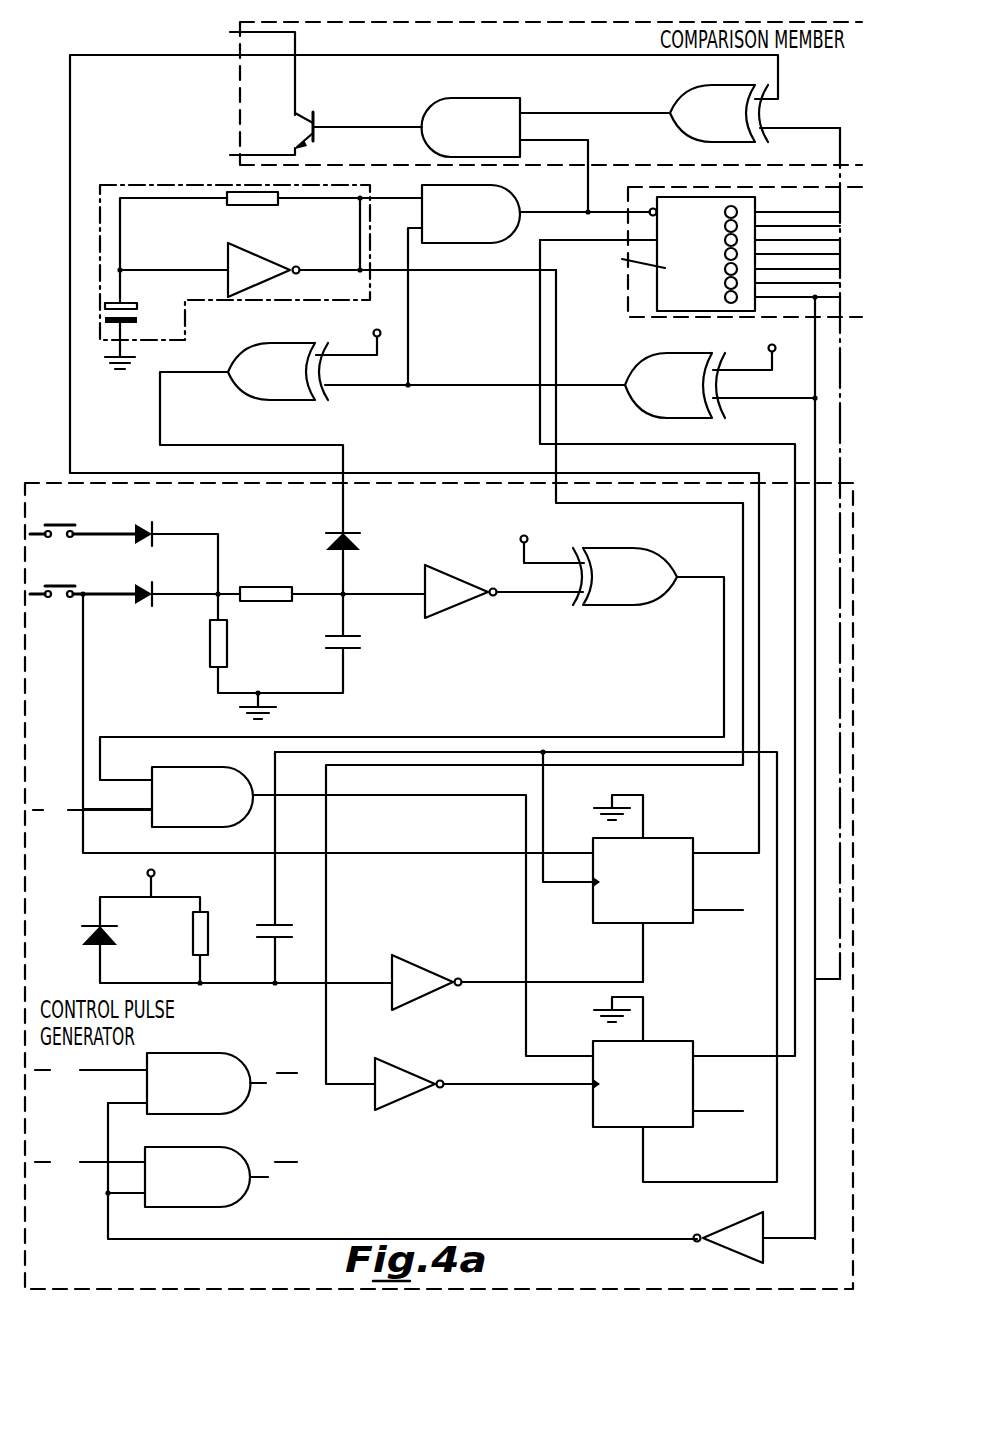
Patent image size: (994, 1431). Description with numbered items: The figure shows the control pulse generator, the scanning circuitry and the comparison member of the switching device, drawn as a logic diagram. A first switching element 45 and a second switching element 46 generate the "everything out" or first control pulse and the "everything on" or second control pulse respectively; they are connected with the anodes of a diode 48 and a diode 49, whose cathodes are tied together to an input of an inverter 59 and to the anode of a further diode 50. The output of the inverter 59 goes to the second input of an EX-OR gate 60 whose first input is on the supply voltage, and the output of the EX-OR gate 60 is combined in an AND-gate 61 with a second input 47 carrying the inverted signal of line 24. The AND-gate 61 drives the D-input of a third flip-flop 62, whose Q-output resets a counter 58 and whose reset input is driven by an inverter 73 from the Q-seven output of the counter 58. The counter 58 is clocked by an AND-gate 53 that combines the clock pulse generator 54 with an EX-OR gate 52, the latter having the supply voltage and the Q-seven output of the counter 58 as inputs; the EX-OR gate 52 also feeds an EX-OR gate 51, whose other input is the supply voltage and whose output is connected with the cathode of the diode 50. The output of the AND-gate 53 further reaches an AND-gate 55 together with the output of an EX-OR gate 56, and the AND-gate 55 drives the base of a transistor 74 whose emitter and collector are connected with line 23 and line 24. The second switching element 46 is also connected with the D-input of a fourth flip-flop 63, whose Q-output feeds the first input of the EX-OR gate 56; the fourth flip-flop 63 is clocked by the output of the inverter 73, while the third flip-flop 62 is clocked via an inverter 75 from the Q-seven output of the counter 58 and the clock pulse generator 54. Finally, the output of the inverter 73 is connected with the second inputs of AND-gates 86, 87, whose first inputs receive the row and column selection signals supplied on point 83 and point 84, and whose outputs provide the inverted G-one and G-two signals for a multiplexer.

The line 23 is at (185, 155).
The line 24 is at (185, 32).
The first switching element 45 is at (63, 522).
The second switching element 46 is at (55, 600).
The second input 47 is at (150, 814).
The diode 48 is at (154, 531).
The diode 49 is at (150, 603).
The further diode 50 is at (348, 530).
The EX-OR gate 51 is at (293, 390).
The EX-OR gate 52 is at (648, 365).
The AND-gate 53 is at (529, 285).
The clock pulse generator 54 is at (162, 184).
The AND-gate 55 is at (522, 98).
The EX-OR gate 56 is at (690, 98).
The counter 58 is at (730, 197).
The inverter 59 is at (462, 605).
The EX-OR gate 60 is at (635, 606).
The AND-gate 61 is at (232, 767).
The third flip-flop 62 is at (592, 1126).
The fourth flip-flop 63 is at (592, 911).
The inverter 73 is at (715, 1244).
The transistor 74 is at (314, 118).
The inverter 75 is at (403, 1066).
The point 83 is at (91, 1070).
The point 84 is at (90, 1164).
The AND-gate 86 is at (242, 1062).
The AND-gate 87 is at (243, 1196).